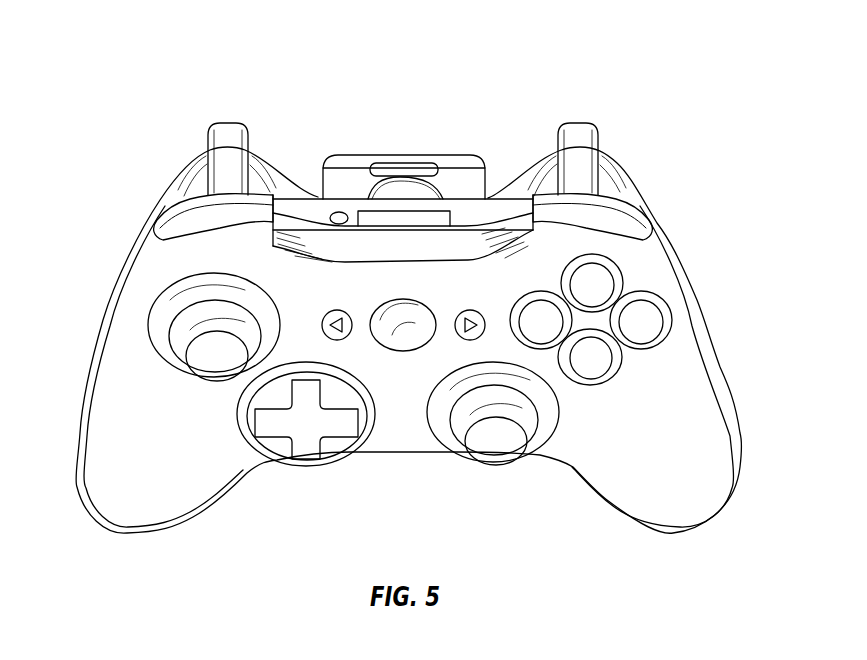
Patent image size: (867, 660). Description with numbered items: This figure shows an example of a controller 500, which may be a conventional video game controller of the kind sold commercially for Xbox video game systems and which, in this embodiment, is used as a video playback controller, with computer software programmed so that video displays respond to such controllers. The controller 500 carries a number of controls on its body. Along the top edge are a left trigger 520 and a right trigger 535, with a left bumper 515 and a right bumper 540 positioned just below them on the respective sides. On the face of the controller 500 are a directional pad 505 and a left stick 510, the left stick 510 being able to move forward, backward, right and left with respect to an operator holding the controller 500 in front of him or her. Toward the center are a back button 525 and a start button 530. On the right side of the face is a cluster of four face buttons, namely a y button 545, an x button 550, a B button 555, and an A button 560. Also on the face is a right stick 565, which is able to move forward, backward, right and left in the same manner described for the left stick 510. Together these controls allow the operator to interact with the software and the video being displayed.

The controller 500 is at (691, 62).
The directional pad 505 is at (307, 455).
The left stick 510 is at (217, 357).
The left bumper 515 is at (180, 207).
The left trigger 520 is at (230, 135).
The back button 525 is at (337, 310).
The start button 530 is at (470, 310).
The right trigger 535 is at (578, 135).
The right bumper 540 is at (630, 202).
The y button 545 is at (595, 283).
The x button 550 is at (543, 318).
The B button 555 is at (643, 323).
The A button 560 is at (590, 367).
The right stick 565 is at (495, 455).